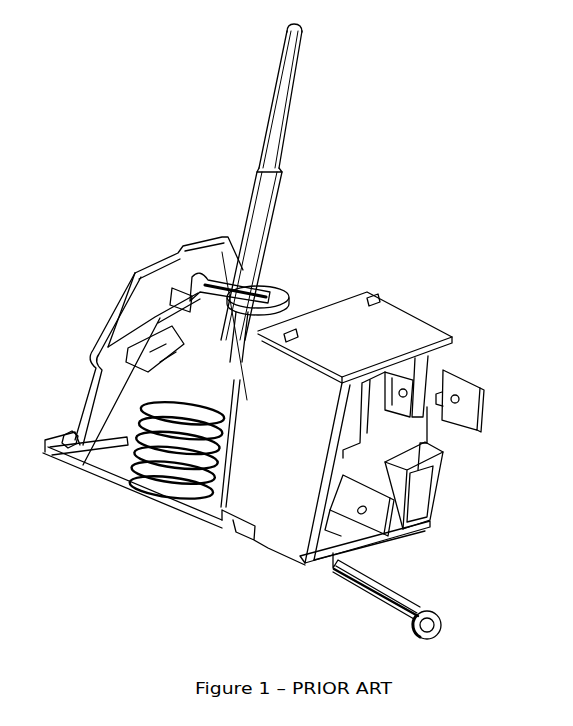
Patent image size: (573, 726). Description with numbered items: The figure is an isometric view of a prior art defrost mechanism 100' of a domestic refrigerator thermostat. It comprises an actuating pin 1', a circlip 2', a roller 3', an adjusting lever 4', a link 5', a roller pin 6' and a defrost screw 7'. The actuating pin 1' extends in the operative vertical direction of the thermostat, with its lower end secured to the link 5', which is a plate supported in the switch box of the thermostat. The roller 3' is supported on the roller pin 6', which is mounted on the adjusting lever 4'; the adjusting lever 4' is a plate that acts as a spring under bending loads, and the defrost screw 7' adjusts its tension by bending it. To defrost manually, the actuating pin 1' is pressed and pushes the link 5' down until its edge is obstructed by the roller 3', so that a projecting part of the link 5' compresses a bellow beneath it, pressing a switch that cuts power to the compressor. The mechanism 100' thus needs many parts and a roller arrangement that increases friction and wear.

The actuating pin 1' is at (291, 193).
The circlip 2' is at (277, 285).
The roller 3' is at (171, 472).
The adjusting lever 4' is at (107, 369).
The link 5' is at (176, 472).
The roller pin 6' is at (107, 361).
The defrost screw 7' is at (175, 274).
The defrost mechanism 100' is at (449, 202).